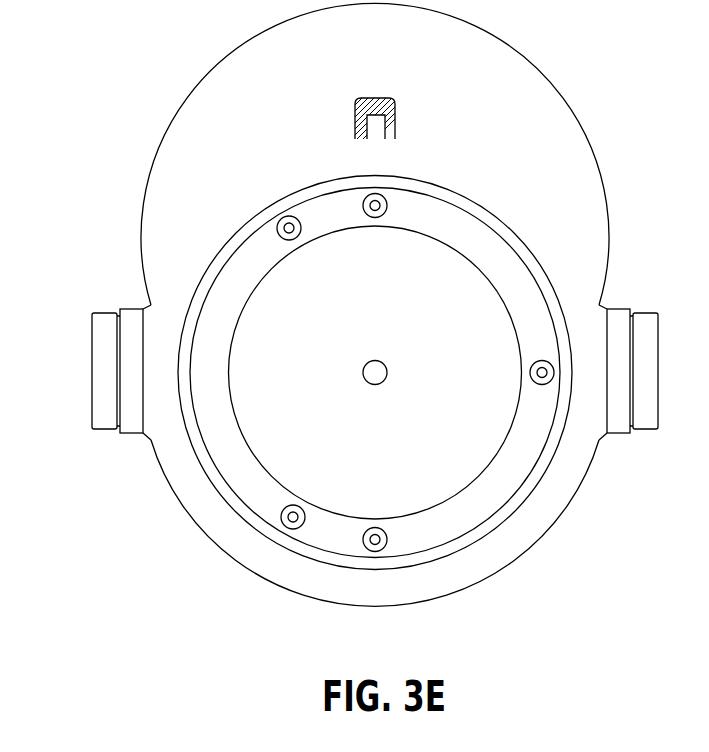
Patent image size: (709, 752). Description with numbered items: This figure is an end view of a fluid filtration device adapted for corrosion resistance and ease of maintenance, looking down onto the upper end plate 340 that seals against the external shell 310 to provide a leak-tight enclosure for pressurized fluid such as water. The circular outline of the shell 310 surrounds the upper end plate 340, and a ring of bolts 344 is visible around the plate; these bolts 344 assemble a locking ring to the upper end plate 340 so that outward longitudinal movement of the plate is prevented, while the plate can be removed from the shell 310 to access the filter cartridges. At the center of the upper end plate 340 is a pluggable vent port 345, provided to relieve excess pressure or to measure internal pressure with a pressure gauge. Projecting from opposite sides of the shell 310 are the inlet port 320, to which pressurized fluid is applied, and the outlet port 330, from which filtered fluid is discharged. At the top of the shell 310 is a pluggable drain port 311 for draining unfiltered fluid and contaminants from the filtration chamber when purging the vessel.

The external shell 310 is at (500, 549).
The pluggable drain port 311 is at (396, 104).
The inlet port 320 is at (645, 312).
The outlet port 330 is at (104, 431).
The upper end plate 340 is at (288, 317).
The bolts 344 is at (368, 197).
The pluggable vent port 345 is at (383, 361).